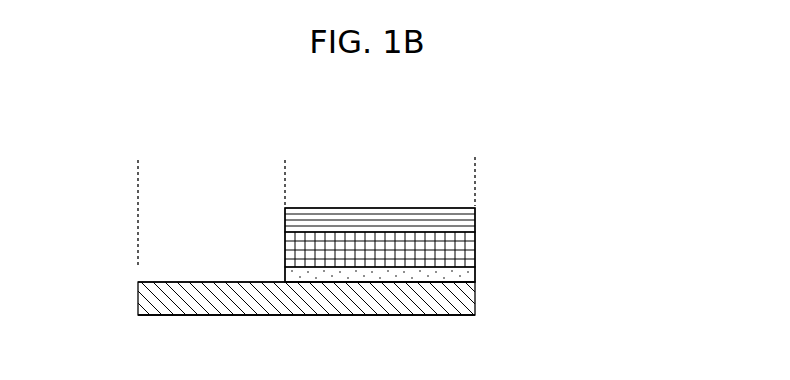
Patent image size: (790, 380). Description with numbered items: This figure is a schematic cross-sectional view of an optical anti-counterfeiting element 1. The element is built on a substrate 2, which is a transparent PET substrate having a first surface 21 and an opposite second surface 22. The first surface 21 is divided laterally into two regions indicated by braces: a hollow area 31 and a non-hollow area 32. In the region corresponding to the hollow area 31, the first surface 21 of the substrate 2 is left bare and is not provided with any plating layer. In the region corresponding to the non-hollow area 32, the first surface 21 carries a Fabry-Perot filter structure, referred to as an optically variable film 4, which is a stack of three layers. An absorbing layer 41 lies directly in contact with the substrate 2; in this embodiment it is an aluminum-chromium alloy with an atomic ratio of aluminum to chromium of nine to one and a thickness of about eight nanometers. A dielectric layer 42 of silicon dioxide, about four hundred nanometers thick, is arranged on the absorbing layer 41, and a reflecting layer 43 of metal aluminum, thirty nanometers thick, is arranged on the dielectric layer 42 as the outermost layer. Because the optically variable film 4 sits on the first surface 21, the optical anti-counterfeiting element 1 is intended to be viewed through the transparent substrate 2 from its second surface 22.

The optical anti-counterfeiting element 1 is at (622, 282).
The substrate 2 is at (458, 305).
The first surface 21 is at (133, 282).
The second surface 22 is at (133, 313).
The hollow area 31 is at (284, 160).
The non-hollow area 32 is at (289, 160).
The optically variable film 4 is at (582, 285).
The absorbing layer 41 is at (458, 273).
The dielectric layer 42 is at (456, 248).
The reflecting layer 43 is at (456, 217).